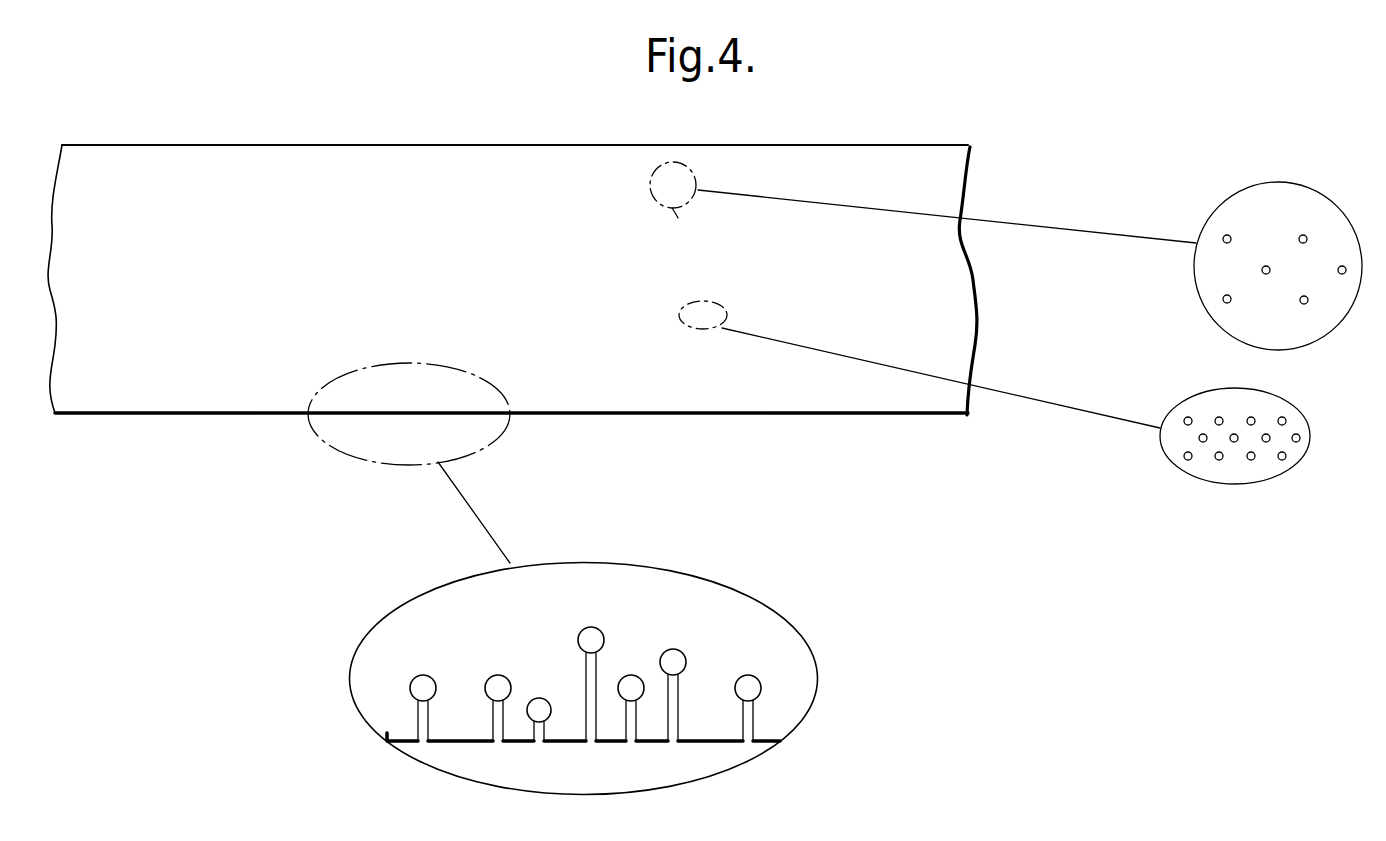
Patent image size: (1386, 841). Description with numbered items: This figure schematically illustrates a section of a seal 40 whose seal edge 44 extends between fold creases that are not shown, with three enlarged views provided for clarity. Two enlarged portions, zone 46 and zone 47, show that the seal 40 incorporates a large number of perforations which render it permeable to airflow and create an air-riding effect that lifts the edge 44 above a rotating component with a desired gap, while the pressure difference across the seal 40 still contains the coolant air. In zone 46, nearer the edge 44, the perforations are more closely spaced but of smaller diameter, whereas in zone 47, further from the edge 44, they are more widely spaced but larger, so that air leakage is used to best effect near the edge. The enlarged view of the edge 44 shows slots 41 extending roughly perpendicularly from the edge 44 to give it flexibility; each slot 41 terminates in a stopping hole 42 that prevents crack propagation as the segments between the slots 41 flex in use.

The seal 40 is at (405, 140).
The slots 41 is at (428, 725).
The stopping holes 42 is at (412, 692).
The seal edge 44 is at (270, 415).
The zone 46 is at (680, 307).
The zone 47 is at (715, 152).